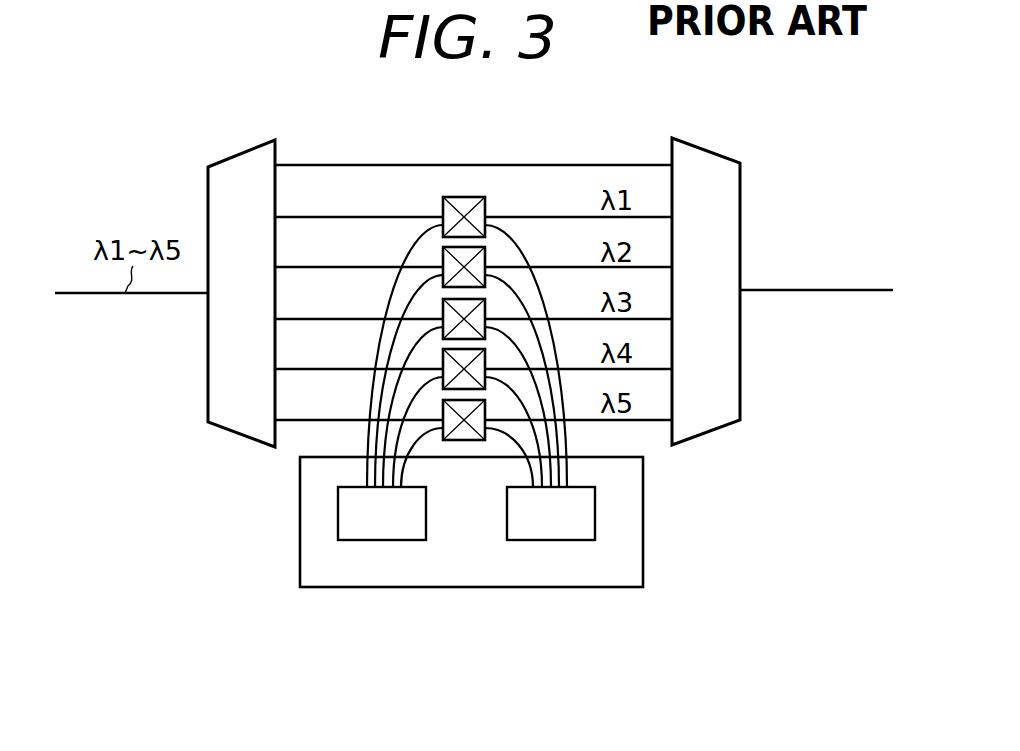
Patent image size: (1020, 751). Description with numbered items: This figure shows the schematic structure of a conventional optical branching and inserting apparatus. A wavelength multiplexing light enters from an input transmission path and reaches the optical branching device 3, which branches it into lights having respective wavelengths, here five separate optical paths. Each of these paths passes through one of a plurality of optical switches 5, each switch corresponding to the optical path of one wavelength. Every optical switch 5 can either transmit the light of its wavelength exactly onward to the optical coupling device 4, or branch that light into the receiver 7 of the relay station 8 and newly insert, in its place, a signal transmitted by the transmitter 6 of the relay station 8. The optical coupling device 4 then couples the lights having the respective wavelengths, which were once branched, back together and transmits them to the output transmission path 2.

The output transmission path 2 is at (808, 290).
The optical branching device 3 is at (238, 152).
The optical coupling device 4 is at (706, 151).
The optical switch 5 is at (487, 200).
The transmitter 6 is at (338, 505).
The receiver 7 is at (595, 502).
The relay station 8 is at (369, 589).